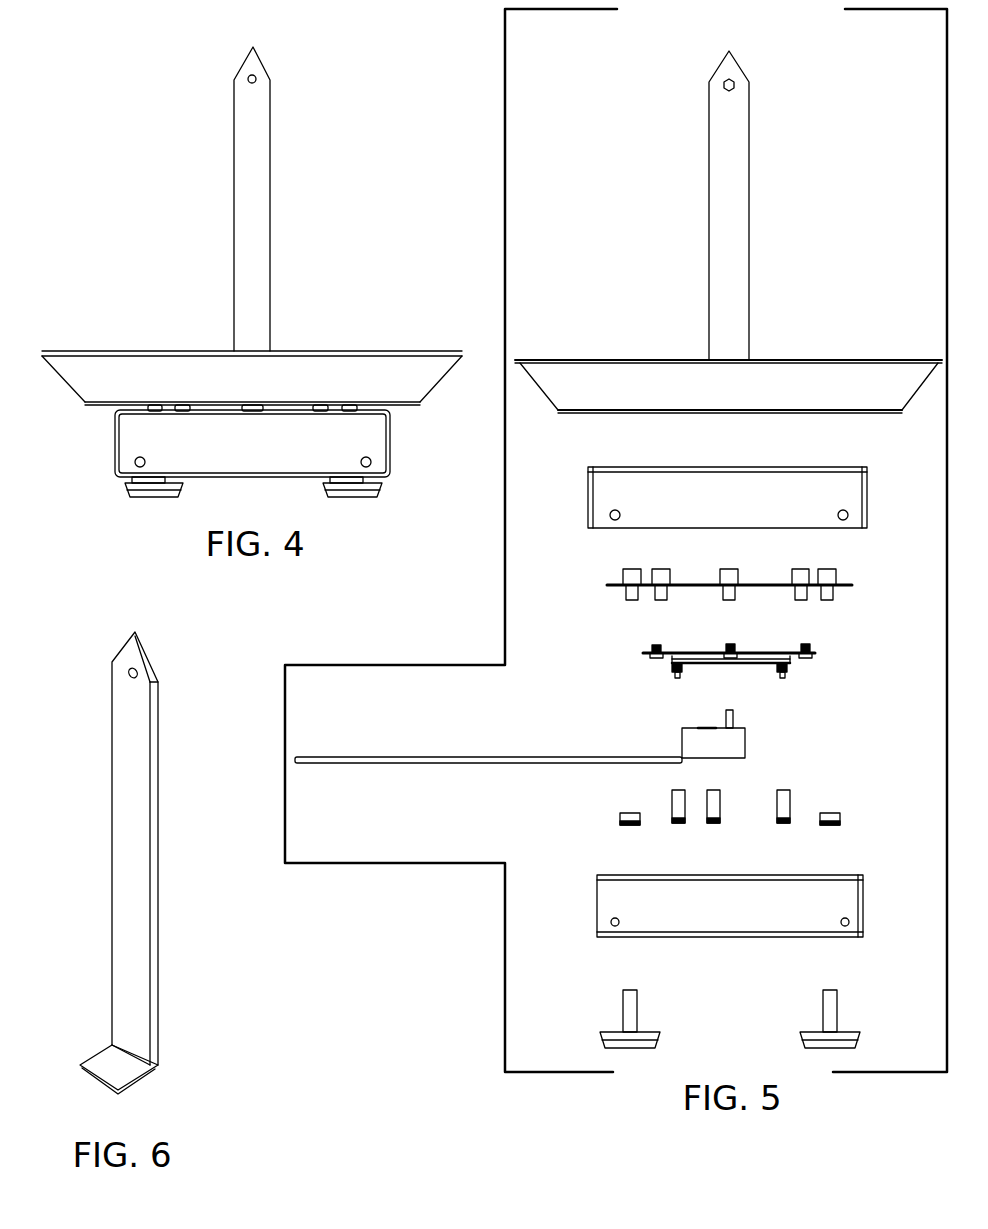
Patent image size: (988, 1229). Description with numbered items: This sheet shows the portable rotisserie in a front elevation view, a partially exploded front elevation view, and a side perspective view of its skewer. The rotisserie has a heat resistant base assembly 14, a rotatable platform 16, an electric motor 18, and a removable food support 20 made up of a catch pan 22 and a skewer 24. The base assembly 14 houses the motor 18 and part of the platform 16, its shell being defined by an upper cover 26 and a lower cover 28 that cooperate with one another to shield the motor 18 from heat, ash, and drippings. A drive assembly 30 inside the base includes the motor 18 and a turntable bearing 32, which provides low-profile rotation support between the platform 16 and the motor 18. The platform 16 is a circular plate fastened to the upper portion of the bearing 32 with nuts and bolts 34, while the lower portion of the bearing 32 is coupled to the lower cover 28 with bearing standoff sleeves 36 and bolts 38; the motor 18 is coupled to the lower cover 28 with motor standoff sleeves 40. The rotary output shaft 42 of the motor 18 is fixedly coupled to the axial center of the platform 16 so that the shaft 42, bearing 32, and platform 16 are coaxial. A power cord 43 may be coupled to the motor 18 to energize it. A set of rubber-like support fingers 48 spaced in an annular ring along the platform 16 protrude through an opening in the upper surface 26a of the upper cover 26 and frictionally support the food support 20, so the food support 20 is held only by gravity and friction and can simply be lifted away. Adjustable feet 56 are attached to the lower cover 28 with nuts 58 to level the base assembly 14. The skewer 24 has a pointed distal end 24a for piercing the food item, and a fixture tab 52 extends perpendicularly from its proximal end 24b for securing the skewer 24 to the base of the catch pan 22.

In FIG. 4, the base assembly 14 is at (390, 455).
In FIG. 5, the base assembly 14 is at (594, 456).
In FIG. 5, the platform 16 is at (852, 585).
In FIG. 5, the motor 18 is at (745, 748).
In FIG. 4, the food support 20 is at (86, 419).
In FIG. 5, the food support 20 is at (911, 424).
In FIG. 4, the catch pan 22 is at (371, 372).
In FIG. 5, the catch pan 22 is at (831, 375).
In FIG. 4, the skewer 24 is at (252, 145).
In FIG. 5, the skewer 24 is at (737, 163).
In FIG. 6, the skewer 24 is at (133, 845).
In FIG. 4, the distal end of skewer 24a is at (276, 56).
In FIG. 5, the distal end of skewer 24a is at (754, 64).
In FIG. 6, the distal end of skewer 24a is at (166, 666).
In FIG. 6, the proximal end of skewer 24b is at (171, 1047).
In FIG. 4, the upper cover 26 is at (221, 456).
In FIG. 5, the upper cover 26 is at (798, 490).
In FIG. 5, the upper surface of upper cover 26a is at (733, 459).
In FIG. 5, the lower cover 28 is at (845, 903).
In FIG. 5, the drive assembly 30 is at (601, 631).
In FIG. 5, the turntable bearing 32 is at (780, 651).
In FIG. 5, the nuts and bolts 34 is at (654, 646).
In FIG. 5, the bearing standoff sleeves 36 is at (675, 805).
In FIG. 5, the bolts 38 is at (677, 678).
In FIG. 5, the motor standoff sleeves 40 is at (715, 805).
In FIG. 5, the shaft 42 is at (735, 714).
In FIG. 5, the power cord 43 is at (478, 758).
In FIG. 4, the support fingers 48 is at (180, 405).
In FIG. 5, the support fingers 48 is at (632, 576).
In FIG. 6, the fixture tab 52 is at (107, 1063).
In FIG. 4, the adjustable feet 56 is at (150, 490).
In FIG. 5, the adjustable feet 56 is at (637, 1010).
In FIG. 5, the nuts 58 is at (620, 818).